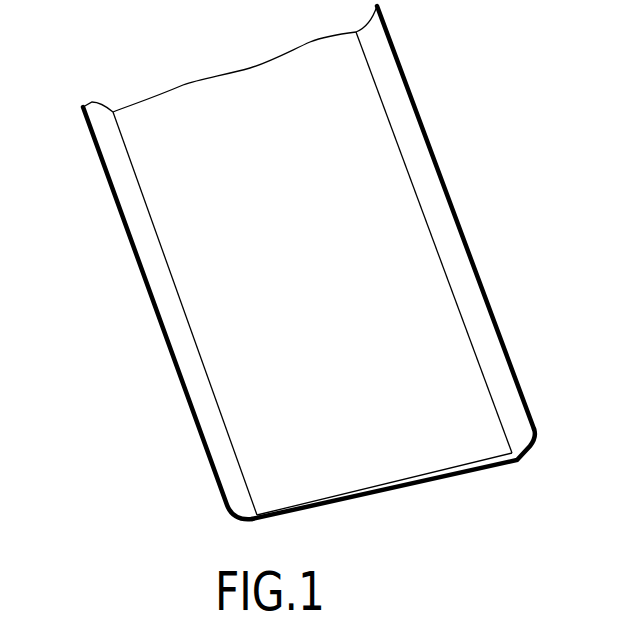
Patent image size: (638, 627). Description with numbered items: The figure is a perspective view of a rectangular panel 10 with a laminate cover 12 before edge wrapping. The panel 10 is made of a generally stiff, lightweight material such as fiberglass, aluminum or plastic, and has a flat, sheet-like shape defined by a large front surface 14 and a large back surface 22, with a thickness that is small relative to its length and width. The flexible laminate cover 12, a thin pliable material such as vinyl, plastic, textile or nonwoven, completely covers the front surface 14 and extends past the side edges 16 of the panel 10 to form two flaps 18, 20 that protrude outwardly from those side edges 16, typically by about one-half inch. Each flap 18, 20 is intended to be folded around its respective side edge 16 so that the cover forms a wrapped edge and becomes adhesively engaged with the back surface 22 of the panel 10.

The panel 10 is at (193, 93).
The laminate cover 12 is at (213, 455).
The front surface 14 is at (455, 486).
The side edge 16 is at (428, 222).
The flap 18 is at (407, 96).
The flap 20 is at (112, 163).
The back surface 22 is at (335, 320).